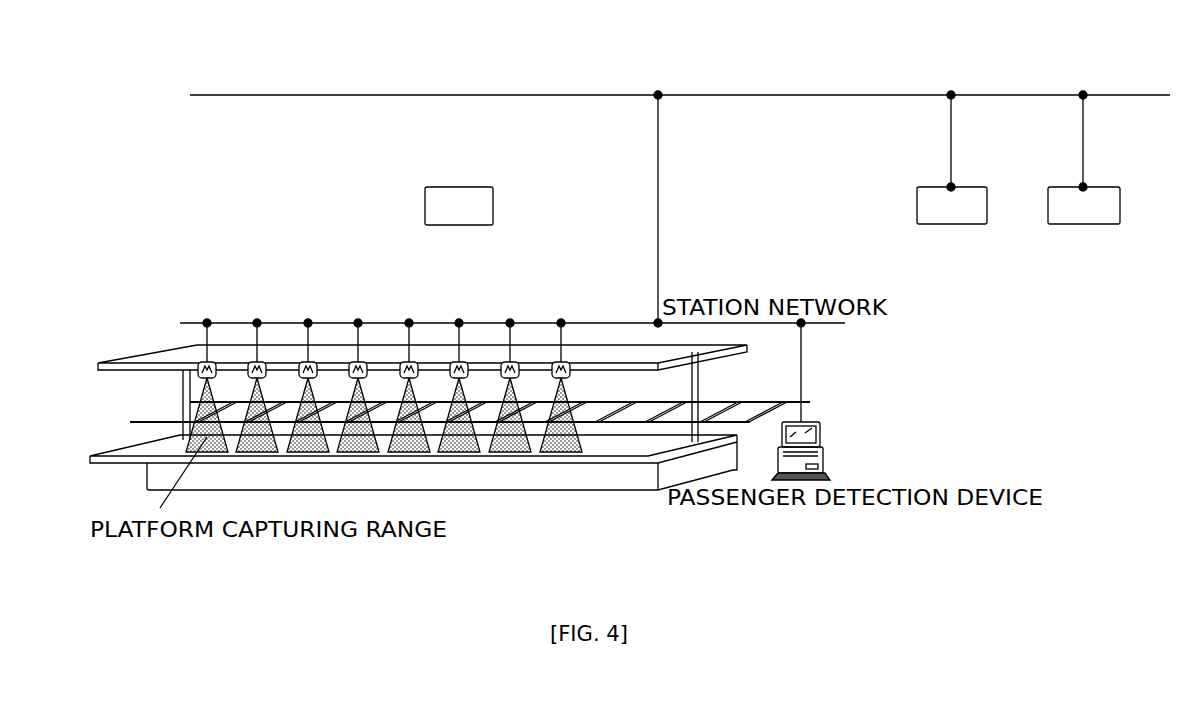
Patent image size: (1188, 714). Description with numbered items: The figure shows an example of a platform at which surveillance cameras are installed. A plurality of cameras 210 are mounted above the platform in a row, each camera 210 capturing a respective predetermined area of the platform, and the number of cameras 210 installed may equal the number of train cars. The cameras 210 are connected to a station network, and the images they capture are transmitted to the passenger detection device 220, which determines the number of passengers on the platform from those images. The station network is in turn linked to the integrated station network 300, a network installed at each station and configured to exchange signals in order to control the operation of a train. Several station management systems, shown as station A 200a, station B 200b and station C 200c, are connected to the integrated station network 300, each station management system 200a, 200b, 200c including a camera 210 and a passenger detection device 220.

The integrated station network 300 is at (821, 66).
The station management system 200a is at (417, 184).
The station management system 200b is at (909, 184).
The station management system 200c is at (1055, 184).
The camera 210 is at (306, 362).
The passenger detection device 220 is at (823, 432).